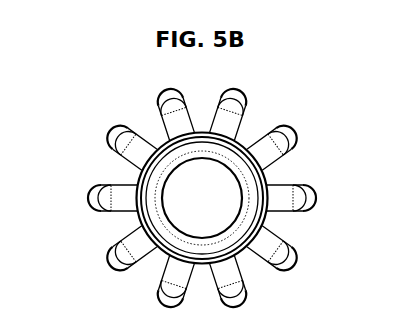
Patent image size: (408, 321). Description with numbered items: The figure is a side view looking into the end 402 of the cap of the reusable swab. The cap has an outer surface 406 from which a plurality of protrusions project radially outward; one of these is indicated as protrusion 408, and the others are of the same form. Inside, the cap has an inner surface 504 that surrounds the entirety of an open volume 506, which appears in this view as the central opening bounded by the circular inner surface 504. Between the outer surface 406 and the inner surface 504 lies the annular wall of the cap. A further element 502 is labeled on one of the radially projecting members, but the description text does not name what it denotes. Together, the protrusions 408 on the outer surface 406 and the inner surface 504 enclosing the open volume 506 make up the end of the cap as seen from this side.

The cap end 402 is at (153, 147).
The outer surface 406 is at (137, 185).
The protrusion 408 is at (293, 133).
The pin 502 is at (270, 199).
The inner surface 504 is at (240, 228).
The open volume 506 is at (178, 205).